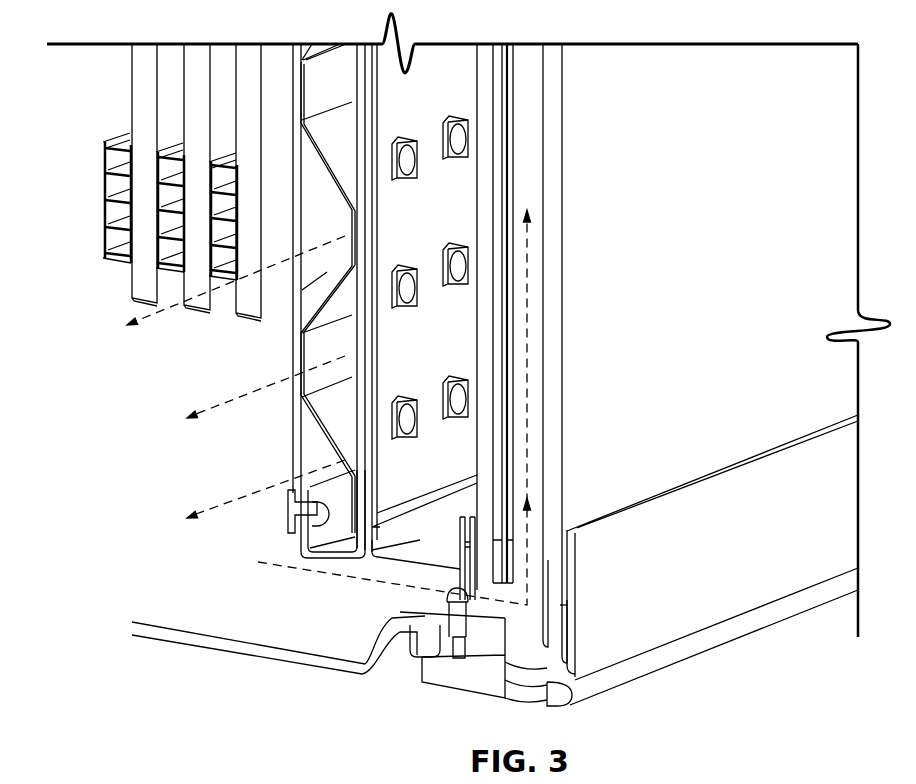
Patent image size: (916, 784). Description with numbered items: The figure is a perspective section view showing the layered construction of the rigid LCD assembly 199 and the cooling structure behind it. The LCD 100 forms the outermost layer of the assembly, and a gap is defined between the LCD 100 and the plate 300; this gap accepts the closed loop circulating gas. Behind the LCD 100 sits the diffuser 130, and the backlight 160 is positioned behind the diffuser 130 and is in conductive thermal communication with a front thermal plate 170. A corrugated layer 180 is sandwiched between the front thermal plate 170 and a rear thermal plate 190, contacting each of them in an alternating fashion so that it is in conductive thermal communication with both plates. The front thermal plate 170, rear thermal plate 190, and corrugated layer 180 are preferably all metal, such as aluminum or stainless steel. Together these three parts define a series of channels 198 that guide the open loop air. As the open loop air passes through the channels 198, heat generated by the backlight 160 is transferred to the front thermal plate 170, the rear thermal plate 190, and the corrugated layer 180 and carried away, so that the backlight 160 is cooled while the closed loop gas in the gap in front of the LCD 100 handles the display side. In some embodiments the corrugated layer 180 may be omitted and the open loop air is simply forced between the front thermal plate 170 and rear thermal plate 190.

The LCD 100 is at (508, 498).
The diffuser 130 is at (487, 413).
The backlight 160 is at (452, 352).
The front thermal plate 170 is at (337, 560).
The corrugated layer 180 is at (340, 140).
The rear thermal plate 190 is at (298, 428).
The channels 198 is at (325, 350).
The rigid LCD assembly 199 is at (380, 575).
The plate 300 is at (555, 450).